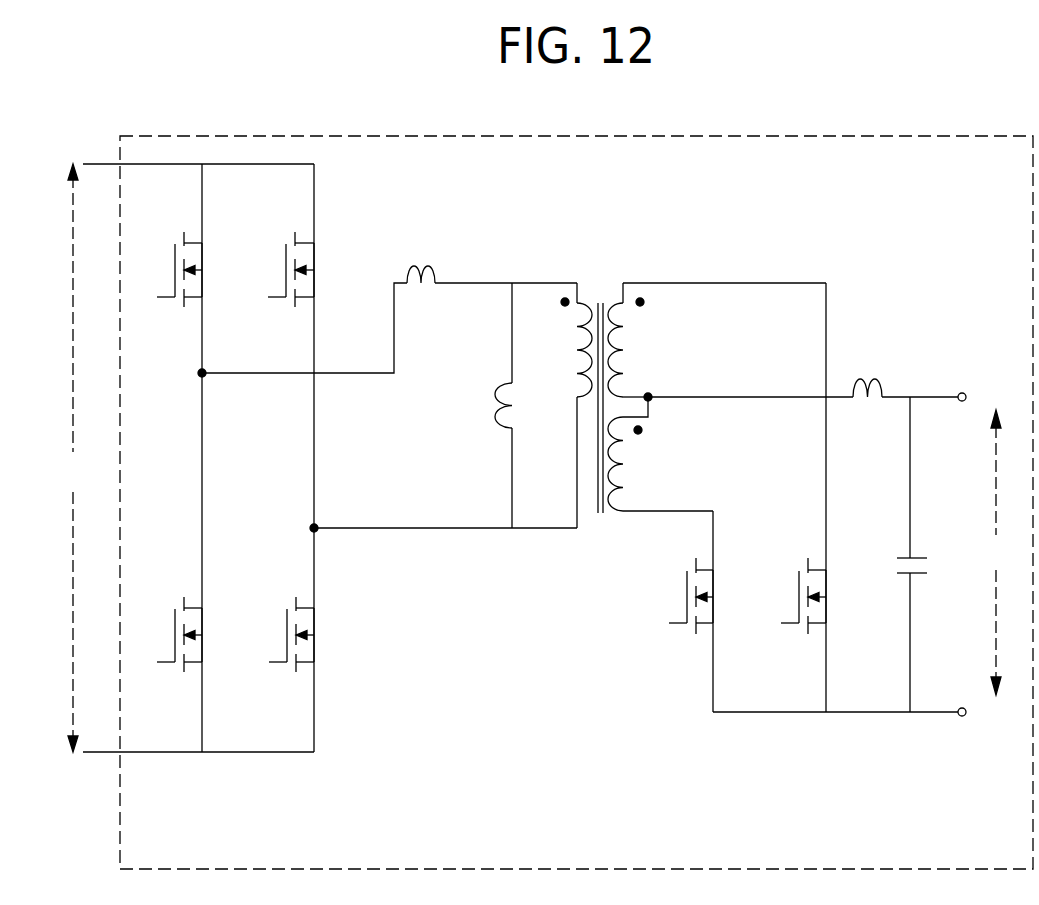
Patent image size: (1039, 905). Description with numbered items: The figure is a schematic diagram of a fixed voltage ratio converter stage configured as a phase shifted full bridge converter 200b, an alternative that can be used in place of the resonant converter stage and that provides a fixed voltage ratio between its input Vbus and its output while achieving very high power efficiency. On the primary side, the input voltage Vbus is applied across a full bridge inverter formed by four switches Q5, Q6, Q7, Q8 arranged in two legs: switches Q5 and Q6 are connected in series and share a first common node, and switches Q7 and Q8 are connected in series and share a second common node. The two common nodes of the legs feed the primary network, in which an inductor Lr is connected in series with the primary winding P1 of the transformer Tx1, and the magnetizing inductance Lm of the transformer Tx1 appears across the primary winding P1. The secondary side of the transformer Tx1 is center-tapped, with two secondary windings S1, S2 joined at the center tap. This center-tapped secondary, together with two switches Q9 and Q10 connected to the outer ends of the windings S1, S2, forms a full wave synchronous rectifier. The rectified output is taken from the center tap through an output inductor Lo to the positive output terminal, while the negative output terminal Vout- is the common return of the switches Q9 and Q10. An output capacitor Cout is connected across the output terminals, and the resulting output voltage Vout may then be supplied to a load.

The phase shifted full bridge converter 200b is at (598, 856).
The switch Q5 is at (193, 269).
The switch Q6 is at (193, 634).
The switch Q7 is at (305, 269).
The switch Q8 is at (306, 634).
The switch Q9 is at (708, 596).
The switch Q10 is at (825, 596).
The inductor Lr is at (421, 256).
The magnetizing inductance Lm is at (485, 405).
The transformer Tx1 is at (630, 389).
The primary winding P1 is at (570, 405).
The first secondary winding S1 is at (631, 340).
The second secondary winding S2 is at (660, 454).
The output inductor Lo is at (867, 373).
The output capacitor Cout is at (934, 554).
The input voltage Vbus is at (61, 458).
The output voltage Vout is at (996, 552).
The negative output terminal Vout- is at (986, 711).